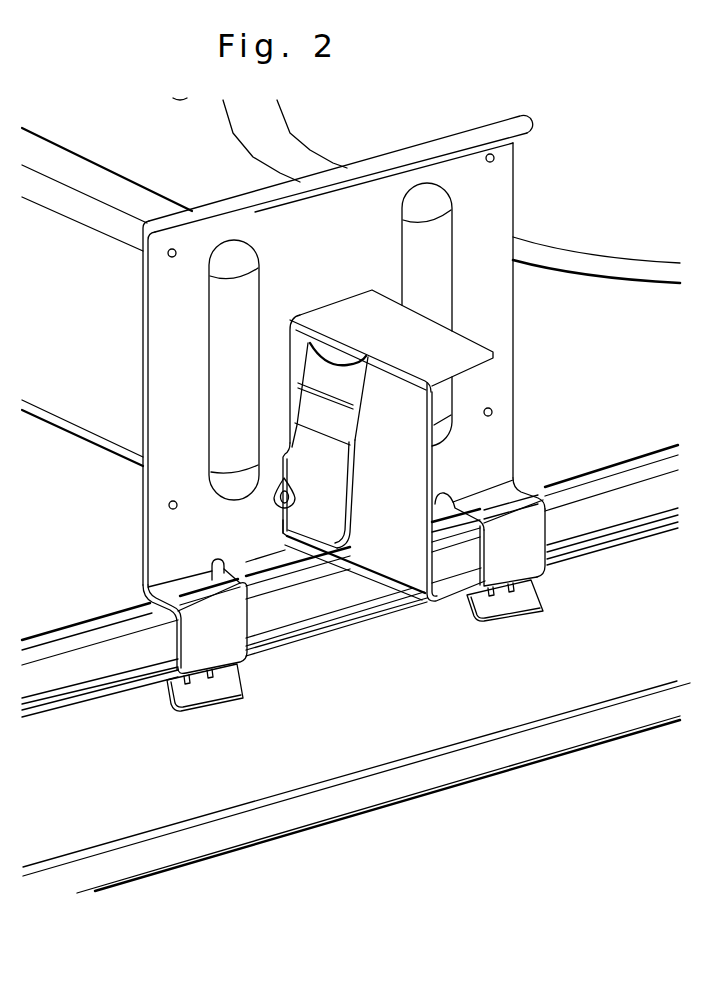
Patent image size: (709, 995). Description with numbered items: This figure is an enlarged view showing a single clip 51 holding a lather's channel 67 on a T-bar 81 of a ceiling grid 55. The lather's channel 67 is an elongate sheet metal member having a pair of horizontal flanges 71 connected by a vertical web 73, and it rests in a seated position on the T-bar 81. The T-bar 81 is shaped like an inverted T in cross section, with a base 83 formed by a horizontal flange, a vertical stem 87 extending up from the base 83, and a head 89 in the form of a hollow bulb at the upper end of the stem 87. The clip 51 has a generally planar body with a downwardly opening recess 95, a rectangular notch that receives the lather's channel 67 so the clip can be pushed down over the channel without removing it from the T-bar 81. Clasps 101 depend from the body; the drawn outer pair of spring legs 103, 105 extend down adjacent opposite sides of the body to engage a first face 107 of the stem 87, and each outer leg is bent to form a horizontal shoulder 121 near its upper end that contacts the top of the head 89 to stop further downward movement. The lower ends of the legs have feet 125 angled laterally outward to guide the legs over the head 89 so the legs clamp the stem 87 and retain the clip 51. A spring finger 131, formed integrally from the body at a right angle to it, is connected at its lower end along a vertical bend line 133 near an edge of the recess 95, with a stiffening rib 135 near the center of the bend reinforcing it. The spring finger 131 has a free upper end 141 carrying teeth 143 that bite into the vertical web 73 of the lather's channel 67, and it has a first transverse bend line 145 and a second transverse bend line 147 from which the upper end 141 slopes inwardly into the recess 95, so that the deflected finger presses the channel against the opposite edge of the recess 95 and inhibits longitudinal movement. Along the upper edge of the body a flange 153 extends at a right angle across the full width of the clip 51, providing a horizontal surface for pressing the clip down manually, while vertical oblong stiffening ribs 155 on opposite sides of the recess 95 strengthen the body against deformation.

The clip 51 is at (524, 189).
The ceiling grid 55 is at (134, 884).
The lather's channel 67 is at (90, 173).
The horizontal flange 71 is at (472, 353).
The vertical web 73 is at (393, 553).
The T-bar 81 is at (302, 762).
The base 83 is at (440, 768).
The stem 87 is at (172, 775).
The head 89 is at (76, 664).
The recess 95 is at (395, 468).
The clasp 101 is at (204, 721).
The outer spring leg 103 is at (175, 633).
The outer spring leg 105 is at (251, 626).
The first face of the stem 107 is at (537, 688).
The horizontal shoulder 121 is at (205, 587).
The foot 125 is at (230, 693).
The spring finger 131 is at (337, 498).
The vertical bend line 133 is at (287, 528).
The stiffening rib 135 is at (277, 498).
The free upper end 141 is at (358, 388).
The tooth 143 is at (365, 357).
The first transverse bend line 145 is at (355, 412).
The second transverse bend line 147 is at (355, 442).
The flange 153 is at (513, 113).
The stiffening rib 155 is at (220, 355).